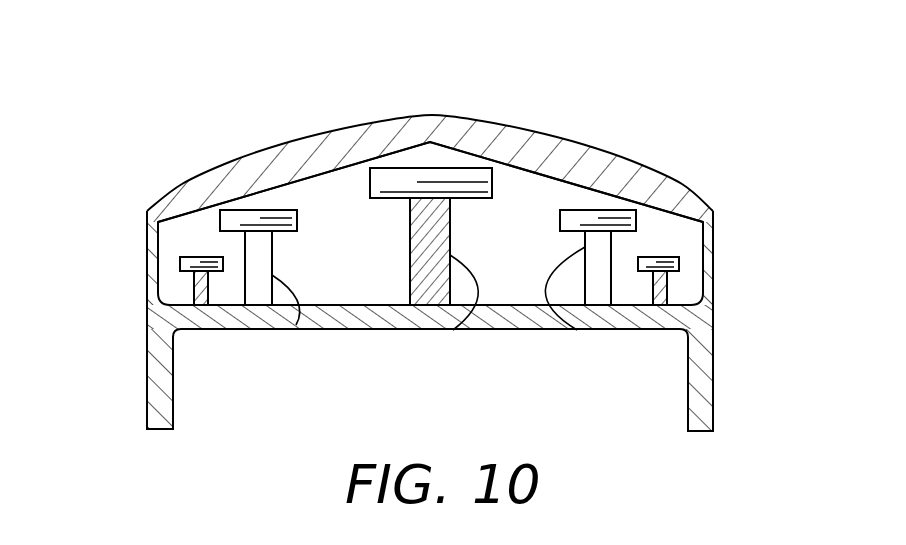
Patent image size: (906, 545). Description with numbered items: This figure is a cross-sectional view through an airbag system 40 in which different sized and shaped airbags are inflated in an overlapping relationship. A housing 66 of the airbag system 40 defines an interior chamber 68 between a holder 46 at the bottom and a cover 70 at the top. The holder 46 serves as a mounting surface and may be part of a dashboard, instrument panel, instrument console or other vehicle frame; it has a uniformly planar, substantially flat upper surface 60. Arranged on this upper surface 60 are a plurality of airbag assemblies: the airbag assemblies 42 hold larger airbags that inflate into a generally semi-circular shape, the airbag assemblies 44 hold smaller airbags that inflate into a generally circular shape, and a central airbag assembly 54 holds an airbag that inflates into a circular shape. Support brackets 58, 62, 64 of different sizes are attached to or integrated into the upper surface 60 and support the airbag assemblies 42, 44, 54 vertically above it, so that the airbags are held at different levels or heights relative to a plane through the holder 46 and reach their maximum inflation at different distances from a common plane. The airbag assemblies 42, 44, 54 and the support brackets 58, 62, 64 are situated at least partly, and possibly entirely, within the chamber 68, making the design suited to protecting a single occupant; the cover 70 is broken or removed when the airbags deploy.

The airbag system 40 is at (400, 246).
The airbag assembly 42 is at (287, 210).
The airbag assembly 44 is at (190, 260).
The holder 46 is at (148, 383).
The central airbag assembly 54 is at (420, 168).
The support bracket 58 is at (195, 290).
The upper surface 60 is at (490, 305).
The support bracket 62 is at (296, 325).
The support bracket 64 is at (453, 330).
The housing 66 is at (454, 183).
The interior chamber 68 is at (380, 222).
The cover 70 is at (487, 123).